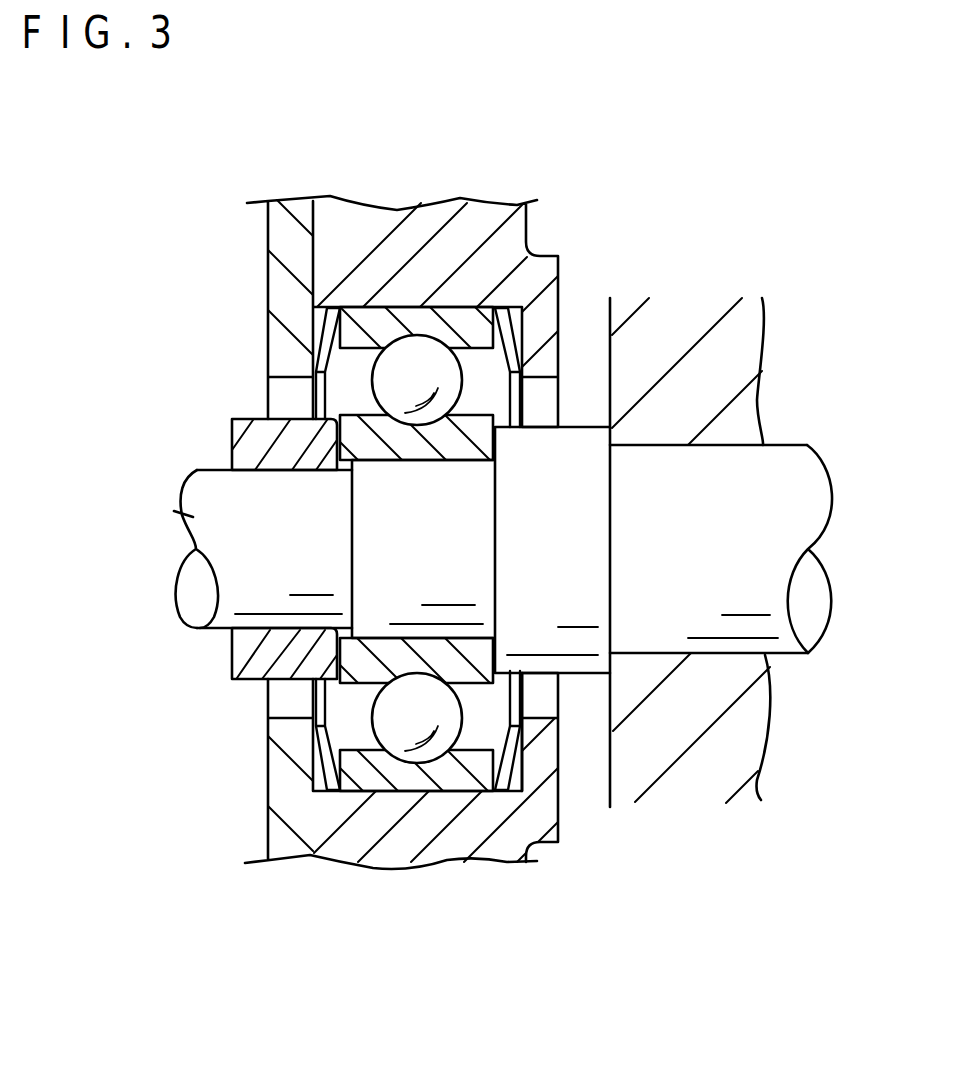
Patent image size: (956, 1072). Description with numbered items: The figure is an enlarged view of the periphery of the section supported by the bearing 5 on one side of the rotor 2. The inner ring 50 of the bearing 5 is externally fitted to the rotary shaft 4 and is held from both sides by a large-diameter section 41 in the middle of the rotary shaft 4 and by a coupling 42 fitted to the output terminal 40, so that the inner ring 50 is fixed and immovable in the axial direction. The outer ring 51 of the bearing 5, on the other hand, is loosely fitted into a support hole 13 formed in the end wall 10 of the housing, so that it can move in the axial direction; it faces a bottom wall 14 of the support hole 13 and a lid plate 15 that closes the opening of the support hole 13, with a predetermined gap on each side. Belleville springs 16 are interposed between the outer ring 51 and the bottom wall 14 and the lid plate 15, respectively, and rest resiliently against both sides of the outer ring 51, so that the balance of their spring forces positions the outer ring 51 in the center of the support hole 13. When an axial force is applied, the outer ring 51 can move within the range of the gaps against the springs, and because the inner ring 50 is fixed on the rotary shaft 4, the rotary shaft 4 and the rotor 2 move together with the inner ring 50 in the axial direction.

The rotor 2 is at (696, 315).
The rotary shaft 4 is at (783, 447).
The bearing 5 is at (412, 347).
The end wall 10 is at (423, 220).
The support hole 13 is at (355, 785).
The bottom wall 14 is at (557, 768).
The lid plate 15 is at (278, 827).
The belleville spring 16 is at (323, 330).
The output terminal 40 is at (193, 518).
The large-diameter section 41 is at (583, 440).
The coupling 42 is at (255, 419).
The inner ring 50 is at (353, 433).
The outer ring 51 is at (357, 308).